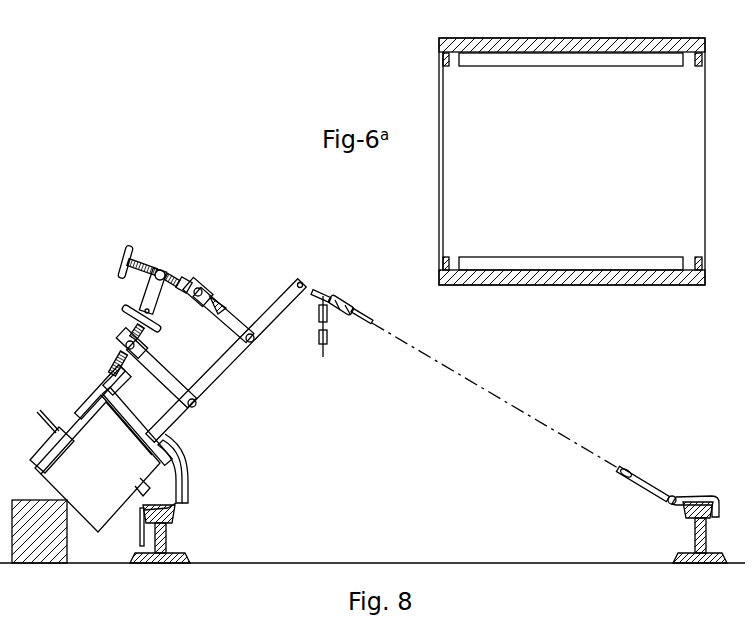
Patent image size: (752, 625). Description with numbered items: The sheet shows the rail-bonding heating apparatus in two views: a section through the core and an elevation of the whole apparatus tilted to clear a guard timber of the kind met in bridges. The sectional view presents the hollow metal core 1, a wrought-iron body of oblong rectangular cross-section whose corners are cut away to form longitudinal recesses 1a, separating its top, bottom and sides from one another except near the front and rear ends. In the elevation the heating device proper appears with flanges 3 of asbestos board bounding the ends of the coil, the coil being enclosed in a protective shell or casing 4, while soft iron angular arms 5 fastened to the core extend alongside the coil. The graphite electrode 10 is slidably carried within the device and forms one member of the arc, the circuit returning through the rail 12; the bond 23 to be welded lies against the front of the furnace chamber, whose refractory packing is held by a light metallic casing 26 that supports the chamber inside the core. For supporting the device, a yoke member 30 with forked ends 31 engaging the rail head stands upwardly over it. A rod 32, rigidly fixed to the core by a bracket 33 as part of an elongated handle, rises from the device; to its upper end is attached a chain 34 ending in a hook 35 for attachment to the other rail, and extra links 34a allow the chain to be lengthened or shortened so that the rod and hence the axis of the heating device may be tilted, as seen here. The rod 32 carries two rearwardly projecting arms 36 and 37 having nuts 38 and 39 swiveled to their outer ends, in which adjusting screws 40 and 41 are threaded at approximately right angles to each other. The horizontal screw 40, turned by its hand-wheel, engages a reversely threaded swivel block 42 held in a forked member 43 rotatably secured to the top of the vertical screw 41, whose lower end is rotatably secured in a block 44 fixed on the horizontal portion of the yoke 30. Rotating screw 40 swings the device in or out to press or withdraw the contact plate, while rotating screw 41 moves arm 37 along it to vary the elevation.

In FIG. 6A, the hollow metal core 1 is at (643, 48).
In FIG. 6A, the longitudinal recesses 1a is at (557, 56).
In FIG. 8, the flanges 3 is at (47, 452).
In FIG. 8, the protective shell or casing 4 is at (50, 481).
In FIG. 8, the angular arms 5 is at (95, 461).
In FIG. 8, the electrode 10 is at (50, 426).
In FIG. 8, the rail 12 is at (173, 534).
In FIG. 8, the bond 23 is at (176, 527).
In FIG. 8, the metallic casing 26 is at (172, 470).
In FIG. 8, the yoke member 30 is at (163, 418).
In FIG. 8, the forked ends 31 is at (180, 498).
In FIG. 8, the rod 32 is at (226, 368).
In FIG. 8, the bracket 33 is at (95, 404).
In FIG. 8, the chain 34 is at (368, 312).
In FIG. 8, the extra links 34a is at (326, 338).
In FIG. 8, the hook 35 is at (697, 498).
In FIG. 8, the rearwardly projecting arm 36 is at (229, 317).
In FIG. 8, the rearwardly projecting arm 37 is at (172, 378).
In FIG. 8, the nut 38 is at (206, 290).
In FIG. 8, the nut 39 is at (120, 338).
In FIG. 8, the horizontal adjusting screw 40 is at (172, 284).
In FIG. 8, the vertical adjusting screw 41 is at (118, 357).
In FIG. 8, the swivel block 42 is at (164, 268).
In FIG. 8, the forked member 43 is at (151, 292).
In FIG. 8, the block 44 is at (105, 380).